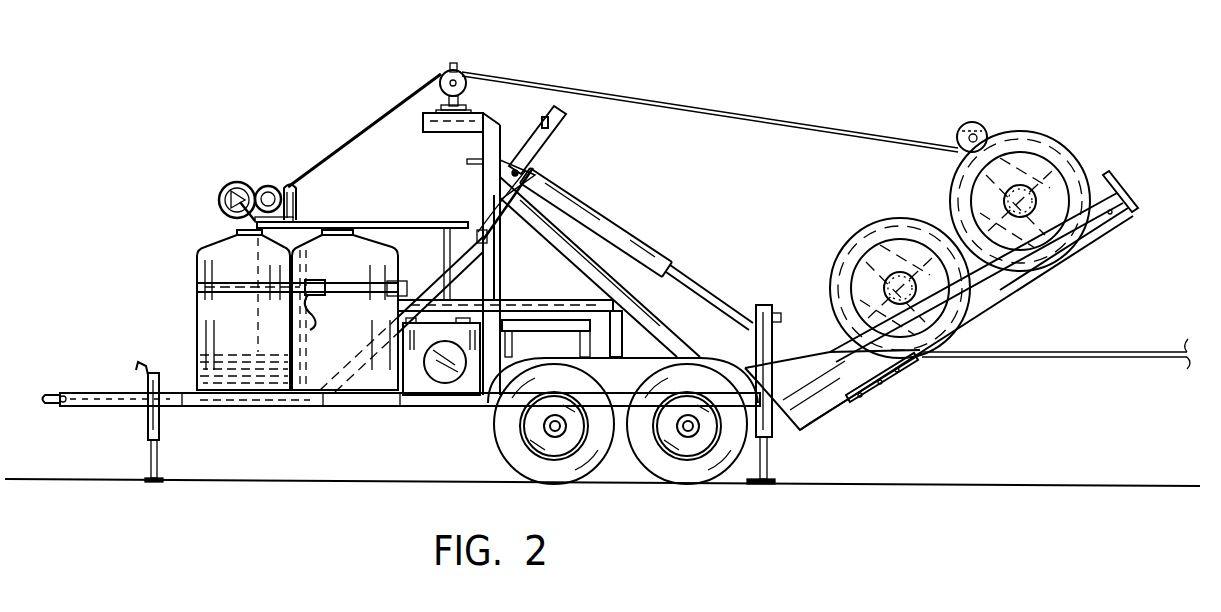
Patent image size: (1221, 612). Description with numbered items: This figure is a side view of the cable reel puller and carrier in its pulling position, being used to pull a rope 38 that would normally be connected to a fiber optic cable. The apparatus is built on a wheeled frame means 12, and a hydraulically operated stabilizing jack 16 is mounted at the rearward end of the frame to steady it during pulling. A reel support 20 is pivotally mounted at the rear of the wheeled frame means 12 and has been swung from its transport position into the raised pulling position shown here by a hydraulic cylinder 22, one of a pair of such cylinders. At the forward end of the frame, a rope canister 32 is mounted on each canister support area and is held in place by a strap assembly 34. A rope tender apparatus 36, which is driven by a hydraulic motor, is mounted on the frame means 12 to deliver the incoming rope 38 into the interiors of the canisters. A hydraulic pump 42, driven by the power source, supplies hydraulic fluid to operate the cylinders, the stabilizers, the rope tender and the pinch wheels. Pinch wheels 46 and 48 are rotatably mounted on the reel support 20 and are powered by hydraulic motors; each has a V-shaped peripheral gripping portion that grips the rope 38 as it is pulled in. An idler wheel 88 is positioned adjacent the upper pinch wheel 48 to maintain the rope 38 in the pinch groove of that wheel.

The wheeled frame means 12 is at (289, 409).
The stabilizing jack 16 is at (762, 304).
The reel support 20 is at (896, 392).
The hydraulic cylinder 22 is at (593, 210).
The rope canister 32 is at (239, 349).
The strap assembly 34 is at (197, 288).
The rope tender apparatus 36 is at (263, 181).
The rope 38 is at (367, 115).
The hydraulic pump 42 is at (441, 373).
The pinch wheel 46 is at (872, 226).
The pinch wheel 48 is at (1043, 133).
The idler wheel 88 is at (965, 120).